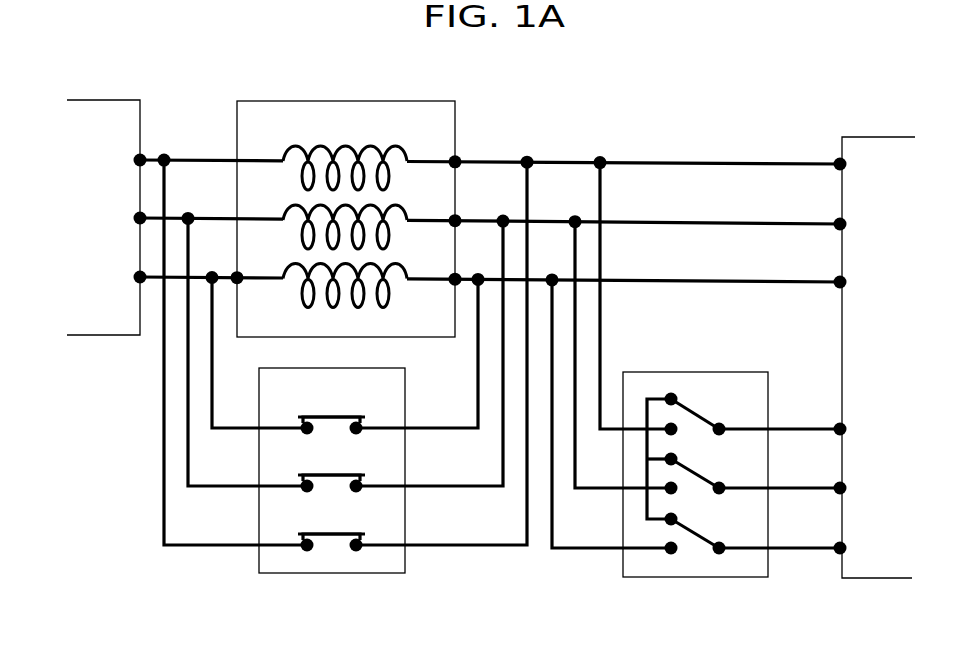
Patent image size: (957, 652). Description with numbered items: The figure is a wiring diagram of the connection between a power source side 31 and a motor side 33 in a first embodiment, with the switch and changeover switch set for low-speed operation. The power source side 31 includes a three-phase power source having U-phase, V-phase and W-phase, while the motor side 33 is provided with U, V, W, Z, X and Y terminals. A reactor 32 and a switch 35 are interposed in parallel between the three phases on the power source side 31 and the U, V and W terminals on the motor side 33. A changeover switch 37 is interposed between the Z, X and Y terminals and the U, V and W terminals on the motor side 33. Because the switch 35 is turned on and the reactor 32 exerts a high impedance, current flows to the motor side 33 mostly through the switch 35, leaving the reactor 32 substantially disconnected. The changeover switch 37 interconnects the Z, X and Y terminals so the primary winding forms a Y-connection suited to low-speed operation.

The power source side 31 is at (94, 340).
The reactor 32 is at (456, 342).
The motor side 33 is at (838, 140).
The switch 35 is at (405, 566).
The changeover switch 37 is at (621, 568).